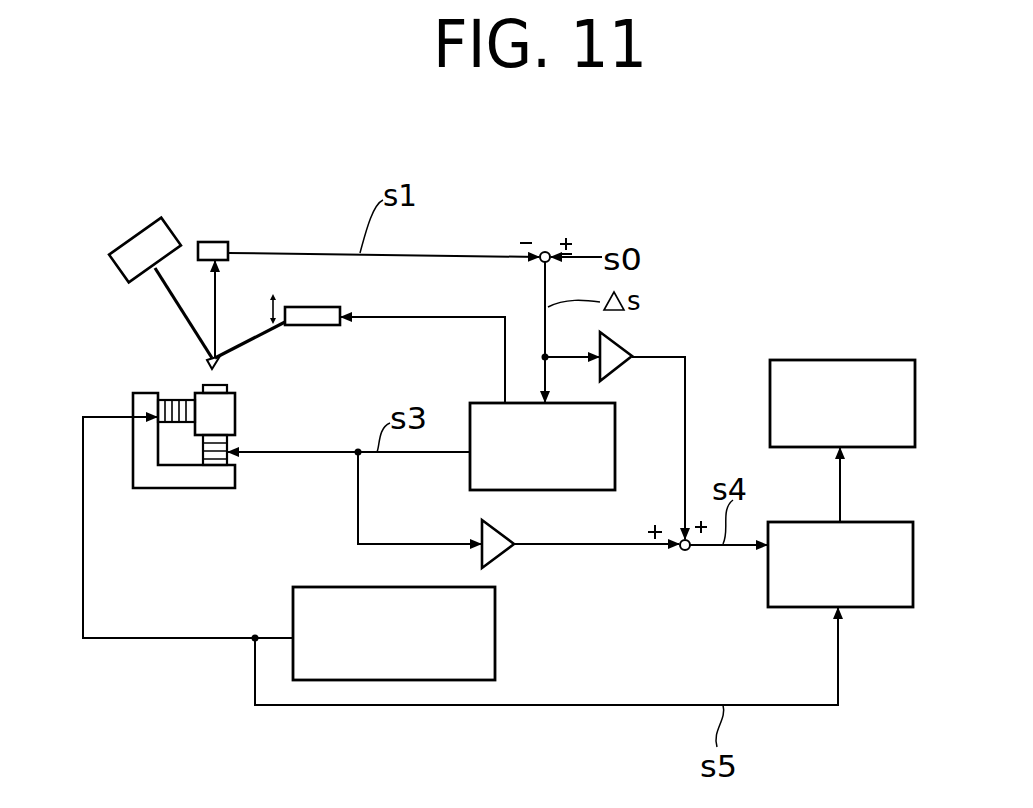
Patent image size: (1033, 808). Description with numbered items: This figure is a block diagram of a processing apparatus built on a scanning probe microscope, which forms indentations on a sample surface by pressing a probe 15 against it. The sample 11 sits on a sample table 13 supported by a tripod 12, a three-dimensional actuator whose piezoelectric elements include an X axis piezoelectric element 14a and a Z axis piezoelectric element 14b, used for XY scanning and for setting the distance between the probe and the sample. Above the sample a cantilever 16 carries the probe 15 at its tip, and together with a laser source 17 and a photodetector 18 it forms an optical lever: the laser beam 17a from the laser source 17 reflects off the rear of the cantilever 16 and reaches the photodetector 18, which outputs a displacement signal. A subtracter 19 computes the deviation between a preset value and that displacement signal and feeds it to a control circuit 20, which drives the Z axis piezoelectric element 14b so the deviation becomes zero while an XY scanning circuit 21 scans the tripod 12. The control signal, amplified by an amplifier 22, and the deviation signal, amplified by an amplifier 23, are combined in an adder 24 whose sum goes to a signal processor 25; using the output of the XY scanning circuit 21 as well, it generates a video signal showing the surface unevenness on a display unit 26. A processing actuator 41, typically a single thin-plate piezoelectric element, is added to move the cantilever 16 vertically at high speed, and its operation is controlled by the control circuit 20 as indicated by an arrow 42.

The sample 11 is at (200, 390).
The tripod 12 is at (192, 489).
The sample table 13 is at (230, 418).
The X axis piezoelectric element 14a is at (160, 400).
The Z axis piezoelectric element 14b is at (232, 463).
The probe 15 is at (218, 366).
The cantilever 16 is at (260, 340).
The laser source 17 is at (118, 248).
The laser beam 17a is at (177, 301).
The photodetector 18 is at (218, 242).
The subtracter 19 is at (545, 252).
The control circuit 20 is at (537, 490).
The XY scanning circuit 21 is at (497, 645).
The amplifier 22 is at (503, 552).
The amplifier 23 is at (623, 343).
The adder 24 is at (686, 552).
The signal processor 25 is at (878, 522).
The display unit 26 is at (863, 362).
The processing actuator 41 is at (318, 307).
The arrow 42 is at (450, 317).